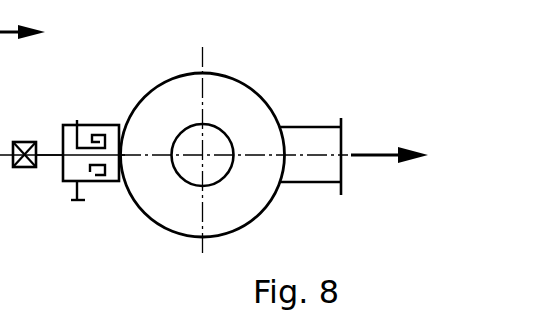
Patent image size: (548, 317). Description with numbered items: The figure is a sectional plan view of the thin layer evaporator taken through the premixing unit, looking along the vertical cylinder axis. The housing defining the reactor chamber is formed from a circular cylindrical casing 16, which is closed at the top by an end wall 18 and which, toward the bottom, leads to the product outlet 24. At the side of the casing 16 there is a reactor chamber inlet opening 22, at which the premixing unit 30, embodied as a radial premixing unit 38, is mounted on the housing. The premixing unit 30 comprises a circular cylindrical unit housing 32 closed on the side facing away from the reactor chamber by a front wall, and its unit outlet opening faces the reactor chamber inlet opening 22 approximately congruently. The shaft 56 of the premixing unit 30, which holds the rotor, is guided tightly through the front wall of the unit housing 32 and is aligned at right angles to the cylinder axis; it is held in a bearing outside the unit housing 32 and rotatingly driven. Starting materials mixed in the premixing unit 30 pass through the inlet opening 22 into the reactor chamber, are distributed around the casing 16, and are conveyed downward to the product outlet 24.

The circular cylindrical casing 16 is at (223, 72).
The end wall 18 is at (235, 102).
The reactor chamber inlet opening 22 is at (137, 205).
The product outlet 24 is at (317, 138).
The premixing unit 30 is at (116, 104).
The unit housing 32 is at (101, 189).
The radial premixing unit 38 is at (91, 108).
The shaft 56 is at (48, 153).